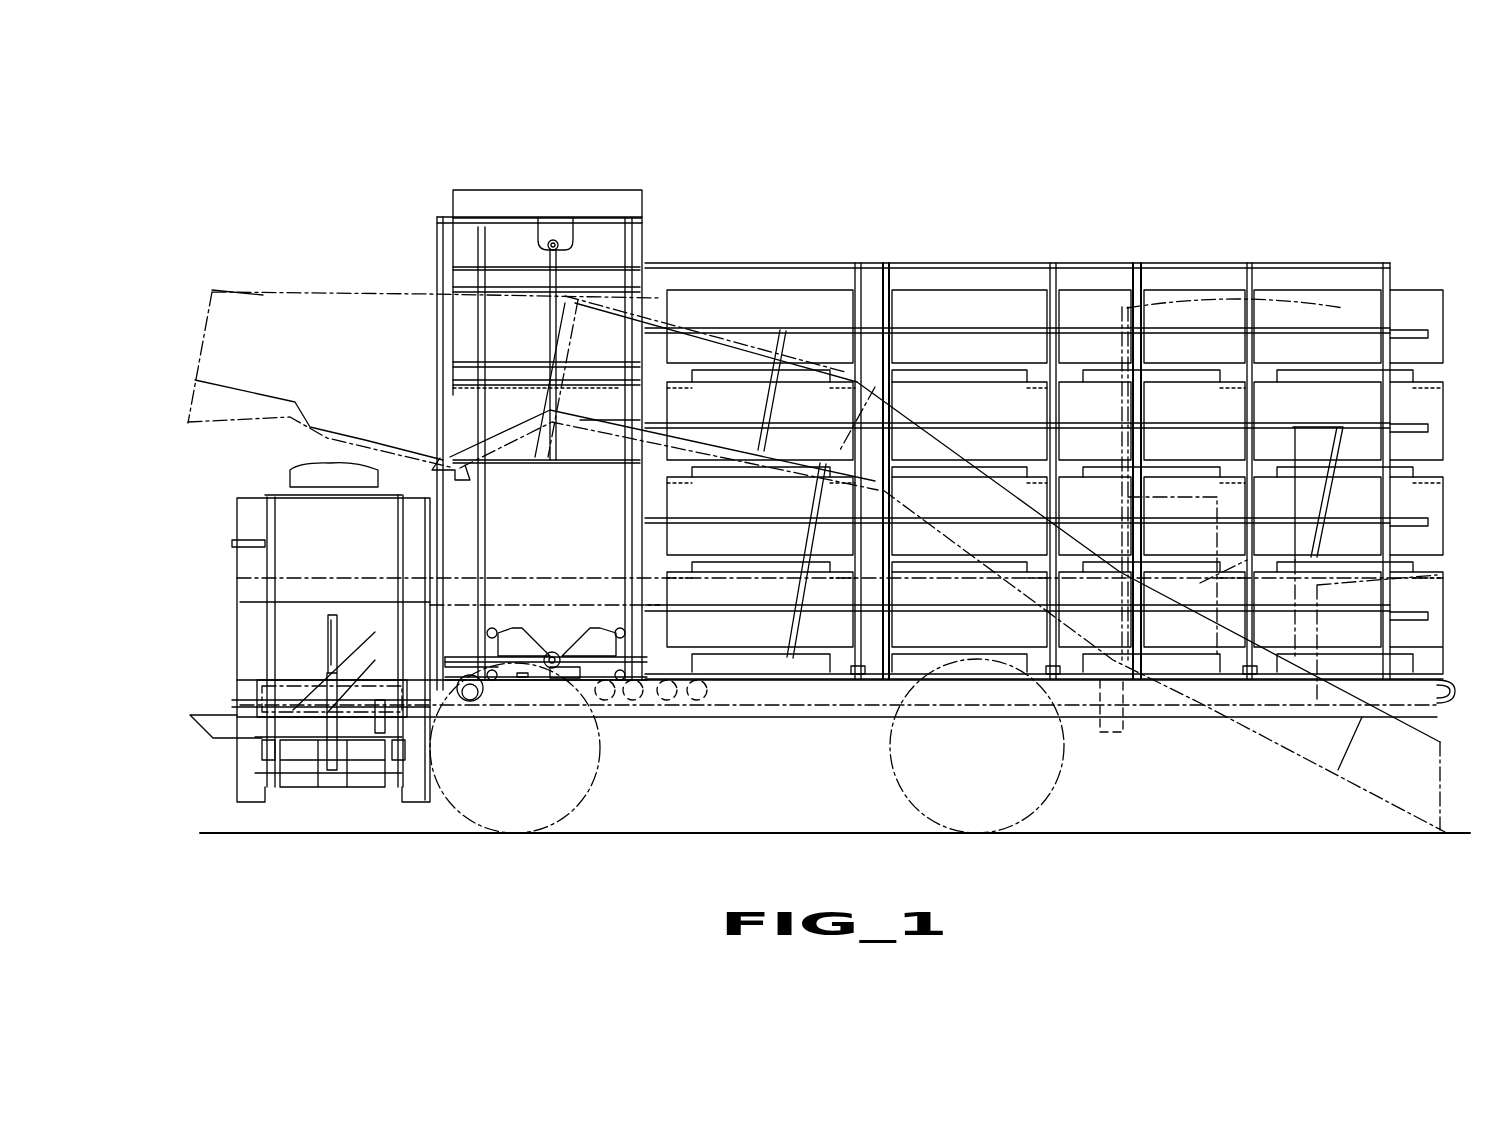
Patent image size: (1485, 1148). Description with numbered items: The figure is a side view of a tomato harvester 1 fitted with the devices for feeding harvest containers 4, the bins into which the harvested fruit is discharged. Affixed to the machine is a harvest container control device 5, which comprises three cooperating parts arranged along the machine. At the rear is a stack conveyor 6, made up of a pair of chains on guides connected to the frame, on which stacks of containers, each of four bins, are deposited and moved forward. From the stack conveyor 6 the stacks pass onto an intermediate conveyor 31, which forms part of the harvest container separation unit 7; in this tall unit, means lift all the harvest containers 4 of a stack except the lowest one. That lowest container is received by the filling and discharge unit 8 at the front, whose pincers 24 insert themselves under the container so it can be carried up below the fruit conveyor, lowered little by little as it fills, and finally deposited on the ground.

The tomato harvester 1 is at (1065, 158).
The harvest containers 4 is at (940, 288).
The harvest container control device 5 is at (1248, 264).
The stack conveyor 6 is at (1449, 680).
The harvest container separation unit 7 is at (608, 185).
The filling and discharge unit 8 is at (247, 489).
The pincers 24 is at (337, 790).
The intermediate conveyor 31 is at (470, 662).